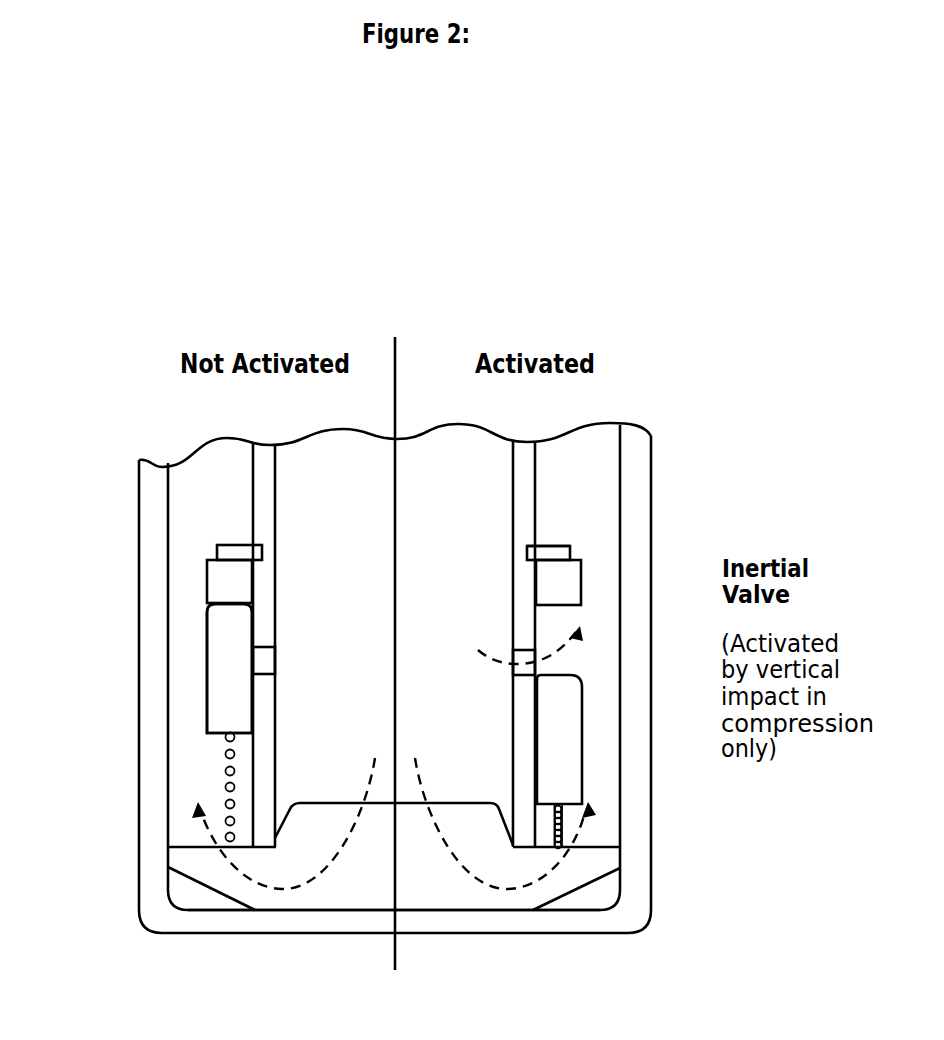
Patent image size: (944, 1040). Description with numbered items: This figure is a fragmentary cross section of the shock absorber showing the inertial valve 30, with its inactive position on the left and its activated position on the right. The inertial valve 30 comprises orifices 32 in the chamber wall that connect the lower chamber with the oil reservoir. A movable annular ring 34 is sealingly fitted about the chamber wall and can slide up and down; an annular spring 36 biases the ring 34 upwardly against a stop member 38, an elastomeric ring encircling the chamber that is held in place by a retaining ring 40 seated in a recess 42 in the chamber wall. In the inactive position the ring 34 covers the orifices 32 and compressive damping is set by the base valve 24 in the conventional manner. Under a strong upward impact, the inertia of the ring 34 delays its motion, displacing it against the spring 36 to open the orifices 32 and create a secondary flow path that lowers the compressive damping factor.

The base valve 24 is at (410, 882).
The inertial valve 30 is at (197, 685).
The orifices 32 is at (265, 657).
The movable annular ring 34 is at (220, 656).
The spring 36 is at (227, 772).
The stop member 38 is at (565, 590).
The retaining ring 40 is at (561, 553).
The recess 42 is at (535, 549).